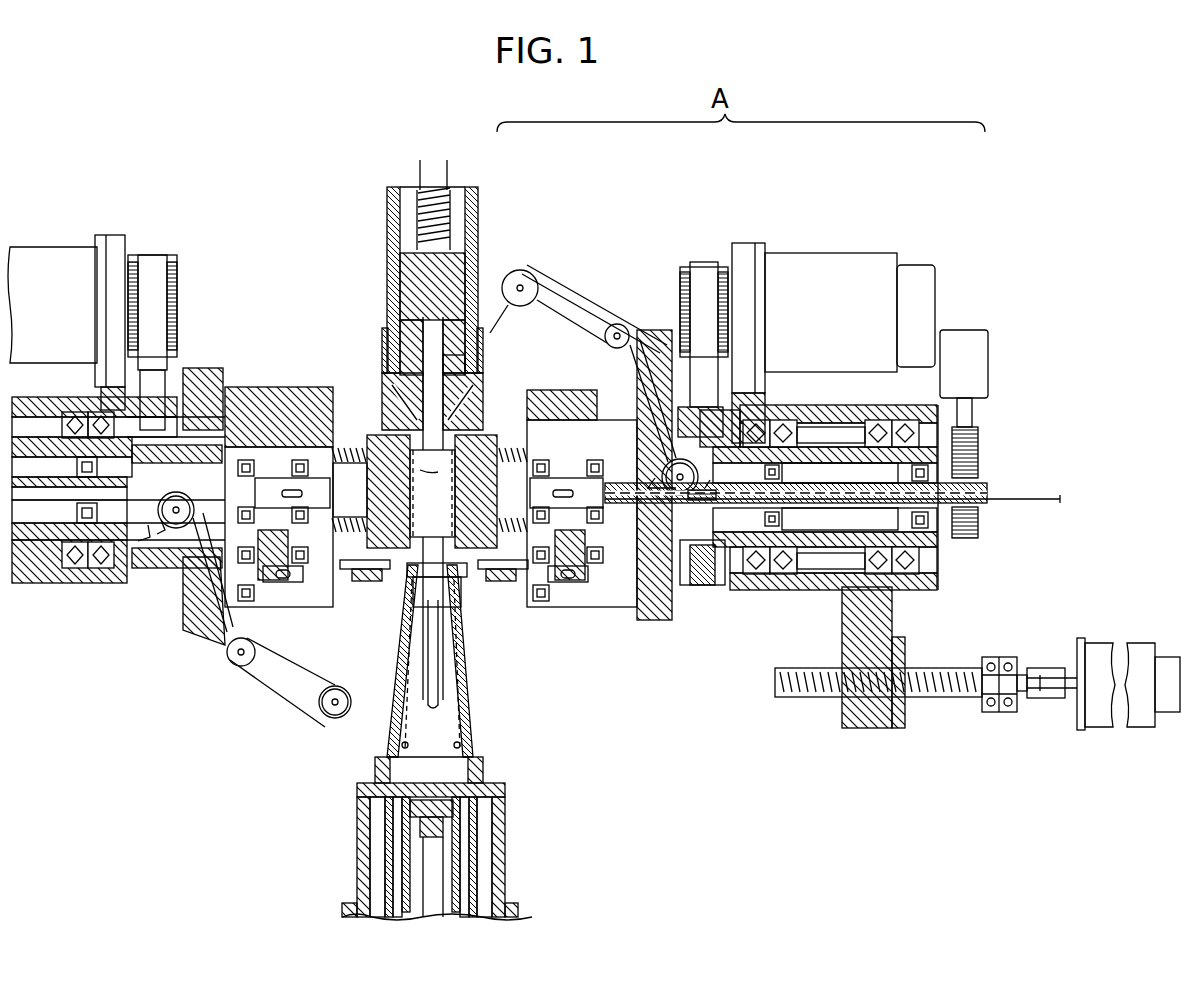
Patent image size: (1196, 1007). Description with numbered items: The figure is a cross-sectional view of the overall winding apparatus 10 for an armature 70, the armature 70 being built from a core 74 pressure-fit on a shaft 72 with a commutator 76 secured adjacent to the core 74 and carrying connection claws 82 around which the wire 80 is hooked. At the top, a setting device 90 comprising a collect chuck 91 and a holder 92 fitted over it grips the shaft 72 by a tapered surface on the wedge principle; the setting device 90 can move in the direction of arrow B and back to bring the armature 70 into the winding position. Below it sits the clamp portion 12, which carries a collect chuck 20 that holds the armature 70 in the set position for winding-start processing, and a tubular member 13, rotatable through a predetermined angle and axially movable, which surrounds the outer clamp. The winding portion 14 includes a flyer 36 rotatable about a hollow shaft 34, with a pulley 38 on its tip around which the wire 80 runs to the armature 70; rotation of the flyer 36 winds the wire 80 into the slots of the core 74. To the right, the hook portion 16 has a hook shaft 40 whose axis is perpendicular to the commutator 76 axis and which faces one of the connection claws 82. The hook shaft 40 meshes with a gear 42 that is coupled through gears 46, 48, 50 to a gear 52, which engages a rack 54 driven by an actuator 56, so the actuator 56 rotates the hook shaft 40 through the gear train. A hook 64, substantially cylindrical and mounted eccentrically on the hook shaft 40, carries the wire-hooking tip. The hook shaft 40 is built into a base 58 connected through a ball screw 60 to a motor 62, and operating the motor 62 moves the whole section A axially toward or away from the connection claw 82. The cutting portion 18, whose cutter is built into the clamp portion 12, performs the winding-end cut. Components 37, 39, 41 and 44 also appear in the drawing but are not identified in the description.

The winding apparatus 10 is at (568, 188).
The clamp portion 12 is at (396, 574).
The tubular member 13 is at (469, 688).
The winding portion 14 is at (604, 290).
The hook portion 16 is at (497, 592).
The cutting portion 18 is at (345, 690).
The collect chuck 20 is at (454, 648).
The hollow shaft 34 is at (990, 492).
The flyer 36 is at (530, 278).
The support plate 37 is at (708, 270).
The pulley 38 is at (528, 305).
The gear 39 is at (682, 280).
The hook shaft 40 is at (504, 590).
The motor 41 is at (858, 268).
The gear 42 is at (560, 592).
The frame block 44 is at (532, 418).
The gear 46 is at (625, 590).
The gear 48 is at (657, 612).
The gear 50 is at (700, 592).
The gear 52 is at (990, 520).
The rack 54 is at (981, 447).
The actuator 56 is at (989, 362).
The base 58 is at (793, 585).
The ball screw 60 is at (948, 698).
The motor 62 is at (1107, 728).
The hook 64 is at (471, 654).
The armature 70 is at (380, 410).
The shaft 72 is at (448, 366).
The core 74 is at (377, 434).
The commutator 76 is at (413, 580).
The wire 80 is at (517, 307).
The connection claws 82 is at (440, 590).
The setting device 90 is at (366, 225).
The collect chuck 91 is at (393, 365).
The holder 92 is at (390, 293).